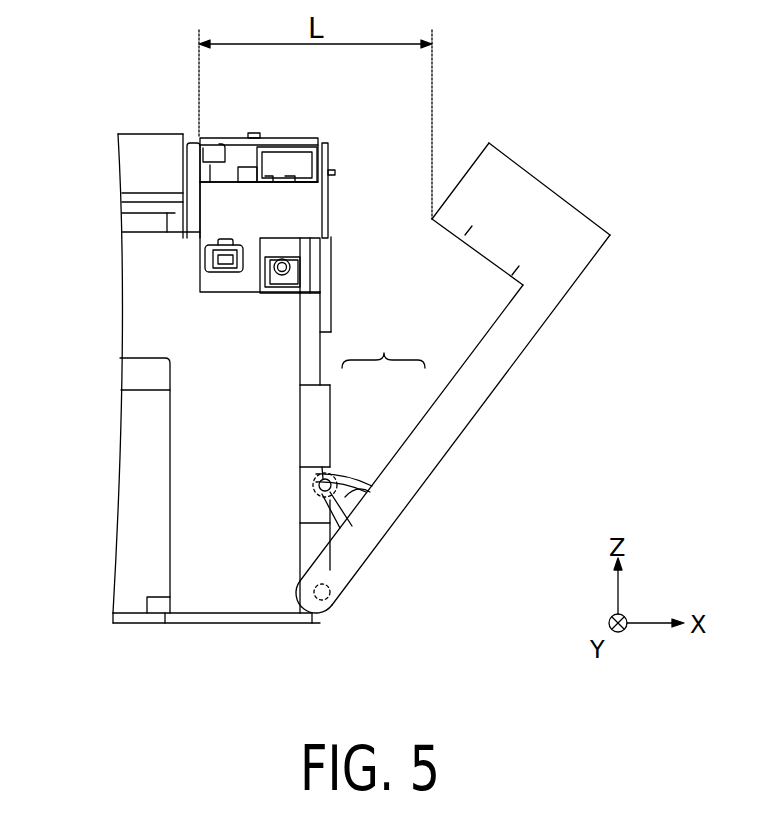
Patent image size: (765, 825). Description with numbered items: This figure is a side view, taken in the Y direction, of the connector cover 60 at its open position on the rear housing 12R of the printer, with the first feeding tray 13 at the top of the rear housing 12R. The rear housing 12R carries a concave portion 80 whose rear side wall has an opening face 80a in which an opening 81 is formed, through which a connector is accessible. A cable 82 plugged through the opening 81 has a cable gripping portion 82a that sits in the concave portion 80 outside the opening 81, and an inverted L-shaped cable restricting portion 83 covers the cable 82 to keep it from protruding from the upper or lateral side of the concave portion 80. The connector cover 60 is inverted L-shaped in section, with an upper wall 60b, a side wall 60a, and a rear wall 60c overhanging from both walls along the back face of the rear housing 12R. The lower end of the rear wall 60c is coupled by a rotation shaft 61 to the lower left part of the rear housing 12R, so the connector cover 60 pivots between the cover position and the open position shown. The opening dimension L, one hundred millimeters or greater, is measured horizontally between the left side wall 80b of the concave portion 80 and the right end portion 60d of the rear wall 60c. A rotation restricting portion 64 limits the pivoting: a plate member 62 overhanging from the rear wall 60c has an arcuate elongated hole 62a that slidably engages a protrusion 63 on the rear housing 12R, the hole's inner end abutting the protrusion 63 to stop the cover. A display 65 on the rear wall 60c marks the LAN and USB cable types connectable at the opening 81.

The rear housing 12R is at (243, 597).
The first feeding tray 13 is at (148, 133).
The concave portion 80 is at (228, 214).
The opening face 80a is at (305, 203).
The left side wall 80b is at (200, 222).
The opening 81 is at (245, 268).
The cable 82 is at (336, 301).
The cable gripping portion 82a is at (286, 285).
The cable restricting portion 83 is at (276, 228).
The connector cover 60 is at (473, 358).
The side wall 60a is at (478, 413).
The upper wall 60b is at (587, 208).
The rear wall 60c is at (498, 360).
The right end portion 60d is at (432, 220).
The rotation shaft 61 is at (335, 588).
The plate member 62 is at (362, 473).
The elongated hole 62a is at (352, 492).
The protrusion 63 is at (323, 468).
The rotation restricting portion 64 is at (369, 427).
The display 65 is at (548, 250).